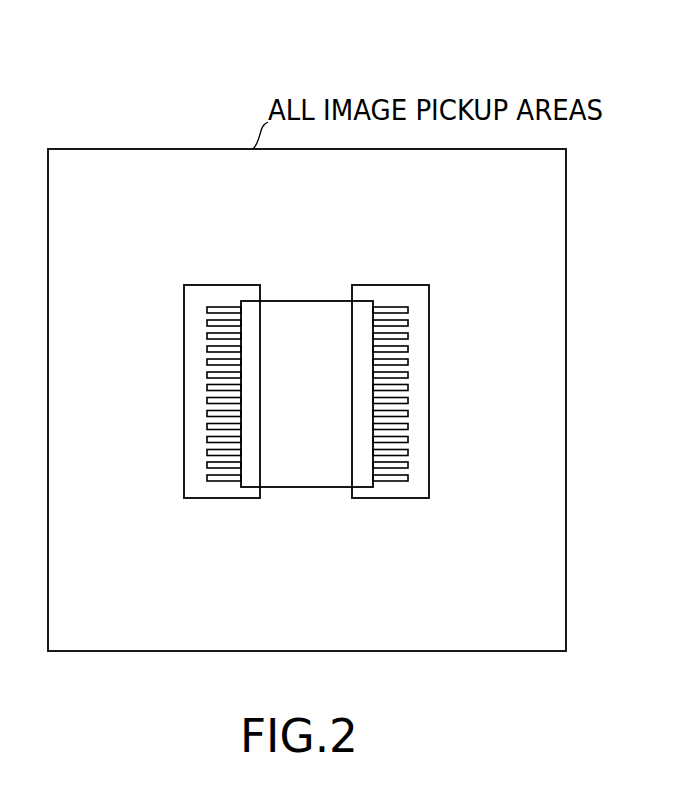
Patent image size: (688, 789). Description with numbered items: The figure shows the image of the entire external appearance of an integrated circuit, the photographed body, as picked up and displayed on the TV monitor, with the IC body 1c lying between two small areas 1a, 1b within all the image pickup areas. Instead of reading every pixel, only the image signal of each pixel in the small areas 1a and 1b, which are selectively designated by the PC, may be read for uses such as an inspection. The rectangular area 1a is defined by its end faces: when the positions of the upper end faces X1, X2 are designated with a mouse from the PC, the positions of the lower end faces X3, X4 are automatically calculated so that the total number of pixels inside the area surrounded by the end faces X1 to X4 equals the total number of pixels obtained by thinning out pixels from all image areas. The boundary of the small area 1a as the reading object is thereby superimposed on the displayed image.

The small area 1a is at (184, 362).
The small area 1b is at (425, 372).
The IC chip 1c is at (318, 307).
The upper end face X1 is at (183, 267).
The upper end face X2 is at (263, 267).
The lower end face X3 is at (185, 523).
The lower end face X4 is at (262, 523).